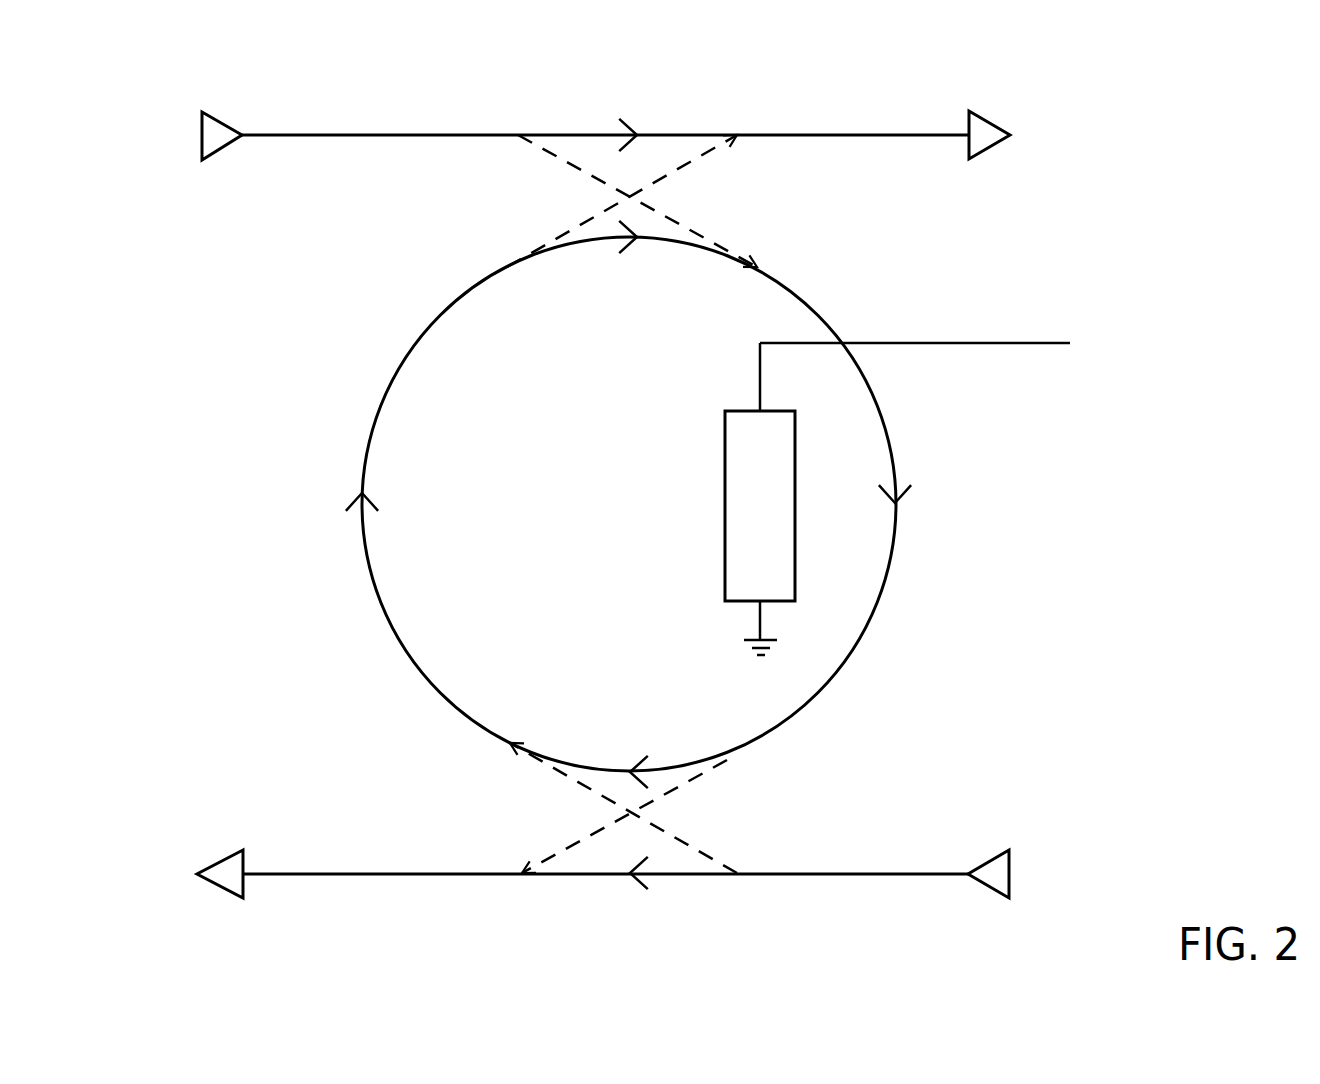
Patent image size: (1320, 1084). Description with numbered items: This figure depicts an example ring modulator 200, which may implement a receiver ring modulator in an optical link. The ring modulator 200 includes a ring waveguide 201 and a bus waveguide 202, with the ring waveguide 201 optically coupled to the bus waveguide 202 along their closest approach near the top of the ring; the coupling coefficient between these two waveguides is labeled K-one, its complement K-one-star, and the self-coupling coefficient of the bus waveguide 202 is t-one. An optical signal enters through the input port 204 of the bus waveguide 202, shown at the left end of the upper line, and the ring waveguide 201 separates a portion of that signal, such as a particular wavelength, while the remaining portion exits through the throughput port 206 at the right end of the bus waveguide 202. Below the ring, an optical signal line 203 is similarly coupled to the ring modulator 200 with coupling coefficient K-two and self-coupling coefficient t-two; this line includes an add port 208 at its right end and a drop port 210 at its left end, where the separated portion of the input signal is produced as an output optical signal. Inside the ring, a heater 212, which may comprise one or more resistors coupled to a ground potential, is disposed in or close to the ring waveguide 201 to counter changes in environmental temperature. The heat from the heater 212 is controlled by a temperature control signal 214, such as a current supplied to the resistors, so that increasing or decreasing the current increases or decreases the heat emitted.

The ring modulator 200 is at (1228, 112).
The ring waveguide 201 is at (408, 350).
The bus waveguide 202 is at (287, 135).
The optical signal line 203 is at (413, 870).
The input port 204 is at (213, 132).
The throughput port 206 is at (983, 133).
The add port 208 is at (997, 872).
The drop port 210 is at (228, 870).
The heater 212 is at (723, 463).
The temperature control signal 214 is at (977, 342).